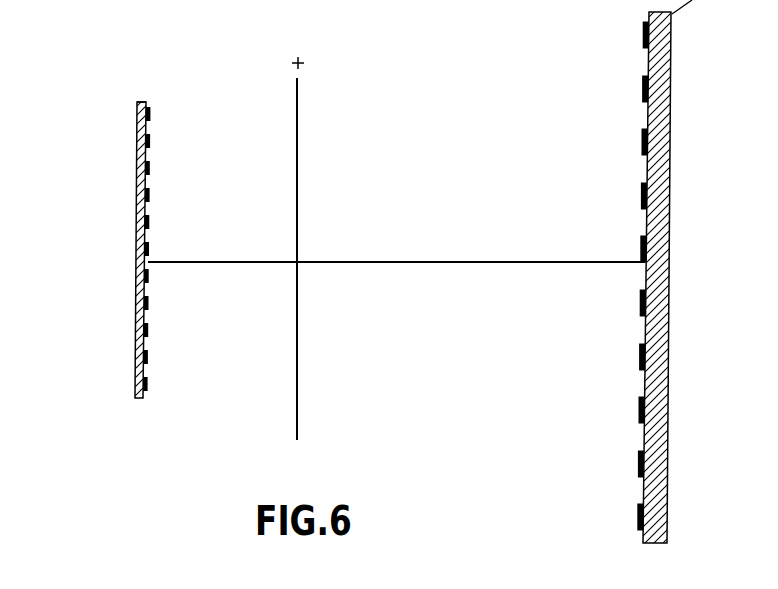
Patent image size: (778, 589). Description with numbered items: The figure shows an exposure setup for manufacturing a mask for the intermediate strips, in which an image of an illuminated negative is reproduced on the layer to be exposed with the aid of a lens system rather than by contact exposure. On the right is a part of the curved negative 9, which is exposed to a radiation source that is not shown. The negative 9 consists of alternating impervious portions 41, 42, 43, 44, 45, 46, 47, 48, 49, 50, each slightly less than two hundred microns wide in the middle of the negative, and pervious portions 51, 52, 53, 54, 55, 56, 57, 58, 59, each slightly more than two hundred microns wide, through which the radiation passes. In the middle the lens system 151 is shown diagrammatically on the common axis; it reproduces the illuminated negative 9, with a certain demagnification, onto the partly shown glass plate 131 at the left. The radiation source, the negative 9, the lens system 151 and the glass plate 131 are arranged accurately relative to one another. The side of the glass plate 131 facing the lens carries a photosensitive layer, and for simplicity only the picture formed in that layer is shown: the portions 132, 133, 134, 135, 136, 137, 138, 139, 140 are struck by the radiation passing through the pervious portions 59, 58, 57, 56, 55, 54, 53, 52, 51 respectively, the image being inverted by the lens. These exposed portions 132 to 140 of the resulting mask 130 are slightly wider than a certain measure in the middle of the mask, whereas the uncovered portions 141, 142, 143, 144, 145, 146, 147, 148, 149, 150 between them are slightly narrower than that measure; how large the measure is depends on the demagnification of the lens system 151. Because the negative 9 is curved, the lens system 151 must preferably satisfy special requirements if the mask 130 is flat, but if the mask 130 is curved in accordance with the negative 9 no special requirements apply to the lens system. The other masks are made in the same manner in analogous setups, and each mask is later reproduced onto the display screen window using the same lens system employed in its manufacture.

The curved negative 9 is at (630, 499).
The impervious portion 41 is at (649, 37).
The impervious portion 42 is at (648, 89).
The impervious portion 43 is at (648, 142).
The impervious portion 44 is at (647, 196).
The impervious portion 45 is at (646, 249).
The impervious portion 46 is at (646, 303).
The impervious portion 47 is at (645, 357).
The impervious portion 48 is at (644, 410).
The impervious portion 49 is at (644, 464).
The impervious portion 50 is at (643, 517).
The pervious portion 51 is at (643, 62).
The pervious portion 52 is at (643, 116).
The pervious portion 53 is at (642, 169).
The pervious portion 54 is at (642, 223).
The pervious portion 55 is at (641, 276).
The pervious portion 56 is at (640, 330).
The pervious portion 57 is at (640, 384).
The pervious portion 58 is at (639, 437).
The pervious portion 59 is at (639, 491).
The mask 130 is at (130, 413).
The glass plate 131 is at (138, 104).
The portion of the photosensitive layer 132 is at (147, 141).
The portion of the photosensitive layer 133 is at (146, 168).
The portion of the photosensitive layer 134 is at (146, 195).
The portion of the photosensitive layer 135 is at (146, 222).
The portion of the photosensitive layer 136 is at (146, 249).
The portion of the photosensitive layer 137 is at (145, 276).
The portion of the photosensitive layer 138 is at (145, 303).
The portion of the photosensitive layer 139 is at (145, 330).
The portion of the photosensitive layer 140 is at (144, 357).
The uncovered portion 141 is at (146, 128).
The uncovered portion 142 is at (146, 155).
The uncovered portion 143 is at (145, 182).
The uncovered portion 144 is at (145, 210).
The uncovered portion 145 is at (145, 237).
The uncovered portion 146 is at (144, 264).
The uncovered portion 147 is at (144, 291).
The uncovered portion 148 is at (144, 318).
The uncovered portion 149 is at (144, 346).
The uncovered portion 150 is at (143, 373).
The lens system 151 is at (300, 234).